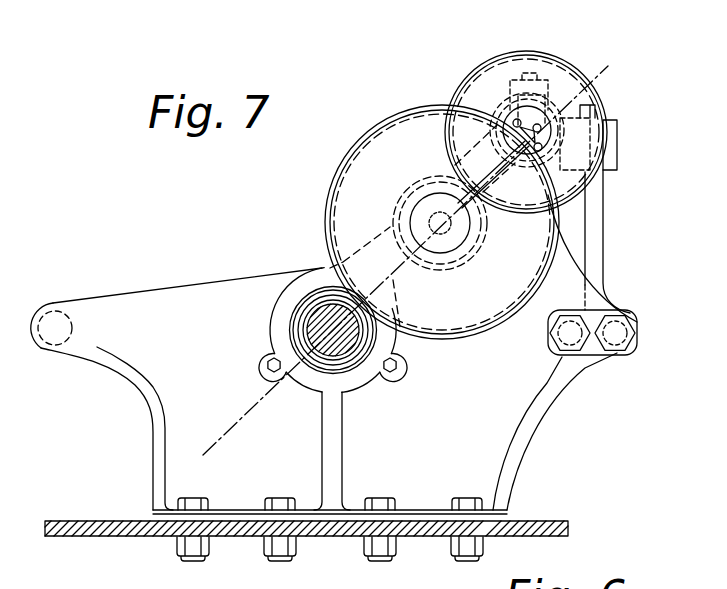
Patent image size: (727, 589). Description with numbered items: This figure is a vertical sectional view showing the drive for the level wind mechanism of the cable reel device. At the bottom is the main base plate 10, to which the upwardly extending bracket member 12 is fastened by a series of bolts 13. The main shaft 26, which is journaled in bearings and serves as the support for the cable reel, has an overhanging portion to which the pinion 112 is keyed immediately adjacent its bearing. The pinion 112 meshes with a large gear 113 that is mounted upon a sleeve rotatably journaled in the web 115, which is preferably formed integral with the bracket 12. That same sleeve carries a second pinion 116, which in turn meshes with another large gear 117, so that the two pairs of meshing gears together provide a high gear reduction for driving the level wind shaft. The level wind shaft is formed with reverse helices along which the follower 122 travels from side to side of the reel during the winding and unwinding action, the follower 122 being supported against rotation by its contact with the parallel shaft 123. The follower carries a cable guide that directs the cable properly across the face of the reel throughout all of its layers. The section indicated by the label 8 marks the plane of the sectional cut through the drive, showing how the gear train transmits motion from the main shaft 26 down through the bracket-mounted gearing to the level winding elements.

The section line 8- 8 is at (216, 436).
The main base plate 10 is at (89, 529).
The bracket member 12 is at (155, 377).
The bolts 13 is at (197, 553).
The main shaft 26 is at (362, 364).
The pinion 112 is at (320, 293).
The large gear 113 is at (356, 178).
The web 115 is at (557, 266).
The pinion 116 is at (430, 184).
The large gear 117 is at (486, 83).
The follower 122 is at (510, 80).
The parallel shaft 123 is at (632, 320).